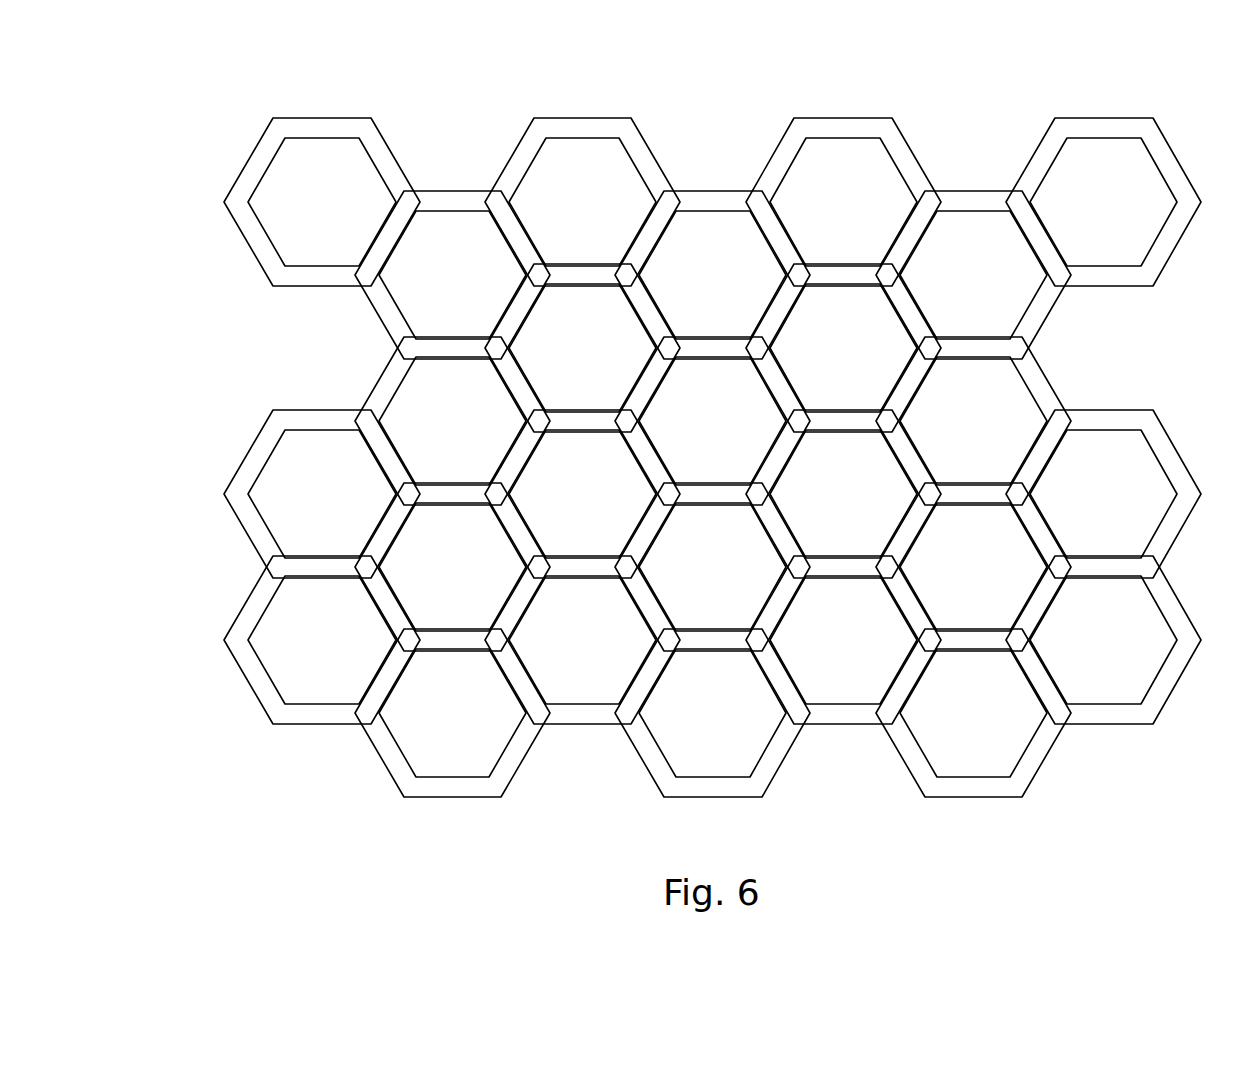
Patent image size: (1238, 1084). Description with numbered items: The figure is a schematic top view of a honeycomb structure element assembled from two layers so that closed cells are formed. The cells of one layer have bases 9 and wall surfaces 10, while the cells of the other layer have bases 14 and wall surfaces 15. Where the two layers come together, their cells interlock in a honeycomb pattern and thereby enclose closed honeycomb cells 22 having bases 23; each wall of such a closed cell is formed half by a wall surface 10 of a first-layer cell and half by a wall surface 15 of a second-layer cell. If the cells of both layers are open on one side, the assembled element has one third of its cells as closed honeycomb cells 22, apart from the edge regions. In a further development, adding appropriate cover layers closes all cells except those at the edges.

The base 9 is at (603, 187).
The wall surface 10 is at (522, 163).
The base 14 is at (302, 482).
The wall surface 15 is at (260, 528).
The closed honeycomb cell 22 is at (435, 562).
The base 23 is at (455, 603).